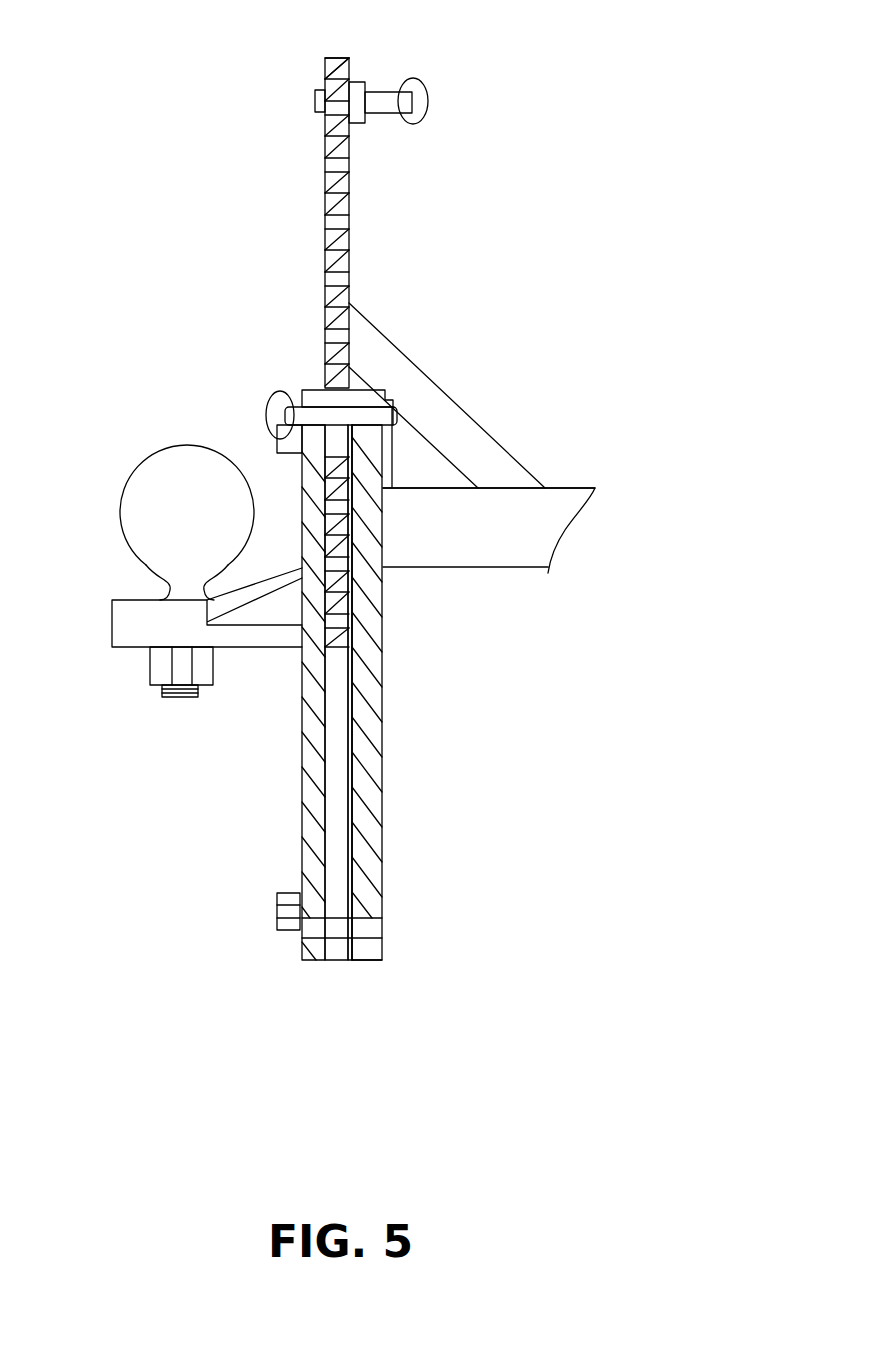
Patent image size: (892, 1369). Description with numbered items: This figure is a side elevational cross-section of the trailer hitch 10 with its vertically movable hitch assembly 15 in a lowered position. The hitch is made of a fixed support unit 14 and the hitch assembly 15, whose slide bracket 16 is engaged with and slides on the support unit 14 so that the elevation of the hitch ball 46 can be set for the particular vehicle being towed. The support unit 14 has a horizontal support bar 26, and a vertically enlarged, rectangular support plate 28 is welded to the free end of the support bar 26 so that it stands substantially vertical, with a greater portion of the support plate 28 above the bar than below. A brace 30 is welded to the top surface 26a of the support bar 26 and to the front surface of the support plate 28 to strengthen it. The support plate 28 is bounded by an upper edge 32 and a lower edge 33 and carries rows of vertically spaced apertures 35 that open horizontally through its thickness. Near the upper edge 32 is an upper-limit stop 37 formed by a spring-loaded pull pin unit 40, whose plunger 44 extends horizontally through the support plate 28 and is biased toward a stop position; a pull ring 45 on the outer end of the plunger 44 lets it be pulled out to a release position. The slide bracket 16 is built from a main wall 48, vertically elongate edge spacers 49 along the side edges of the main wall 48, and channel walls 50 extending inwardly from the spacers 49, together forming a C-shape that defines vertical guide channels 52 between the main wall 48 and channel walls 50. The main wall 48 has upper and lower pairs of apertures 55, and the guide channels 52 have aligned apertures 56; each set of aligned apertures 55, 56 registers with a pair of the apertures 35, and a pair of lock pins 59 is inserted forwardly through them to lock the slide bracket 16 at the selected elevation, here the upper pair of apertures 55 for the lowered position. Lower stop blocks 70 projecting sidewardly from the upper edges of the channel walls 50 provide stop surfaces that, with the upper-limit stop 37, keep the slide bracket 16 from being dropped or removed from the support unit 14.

The trailer hitch 10 is at (432, 516).
The support unit 14 is at (577, 474).
The hitch assembly 15 is at (175, 710).
The slide bracket 16 is at (398, 803).
The support bar 26 is at (536, 477).
The top surface 26a is at (436, 488).
The support plate 28 is at (343, 72).
The brace 30 is at (503, 449).
The upper edge 32 is at (336, 58).
The lower edge 33 is at (337, 647).
The apertures 35 is at (340, 173).
The upper-limit stop 37 is at (472, 131).
The pull pin unit 40 is at (388, 128).
The plunger 44 is at (318, 112).
The pull ring 45 is at (428, 95).
The hitch ball 46 is at (153, 462).
The main wall 48 is at (308, 795).
The edge spacers 49 is at (335, 850).
The channel walls 50 is at (360, 742).
The guide channels 52 is at (338, 950).
The apertures 55 is at (310, 390).
The apertures 56 is at (385, 400).
The lock pins 59 is at (397, 415).
The stop blocks 70 is at (393, 462).